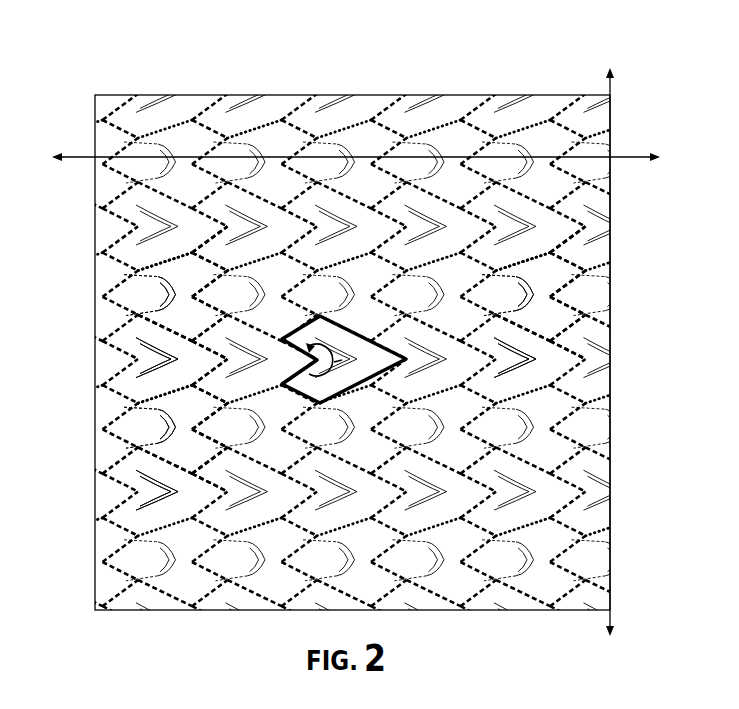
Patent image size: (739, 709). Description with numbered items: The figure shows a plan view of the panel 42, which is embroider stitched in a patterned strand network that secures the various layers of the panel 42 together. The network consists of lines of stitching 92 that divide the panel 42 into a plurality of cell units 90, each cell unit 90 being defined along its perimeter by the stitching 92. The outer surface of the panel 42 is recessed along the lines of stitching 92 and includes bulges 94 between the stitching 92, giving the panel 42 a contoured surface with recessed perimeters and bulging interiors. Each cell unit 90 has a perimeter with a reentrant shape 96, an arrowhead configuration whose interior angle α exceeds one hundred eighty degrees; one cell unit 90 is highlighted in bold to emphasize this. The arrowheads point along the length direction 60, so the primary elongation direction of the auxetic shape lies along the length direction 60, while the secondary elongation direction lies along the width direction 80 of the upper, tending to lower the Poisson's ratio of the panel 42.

The panel 42 is at (136, 89).
The length direction 60 is at (82, 156).
The width direction 80 is at (612, 86).
The cell units 90 is at (535, 378).
The lines of stitching 92 is at (155, 320).
The bulges 94 is at (153, 420).
The reentrant shape 96 is at (358, 404).